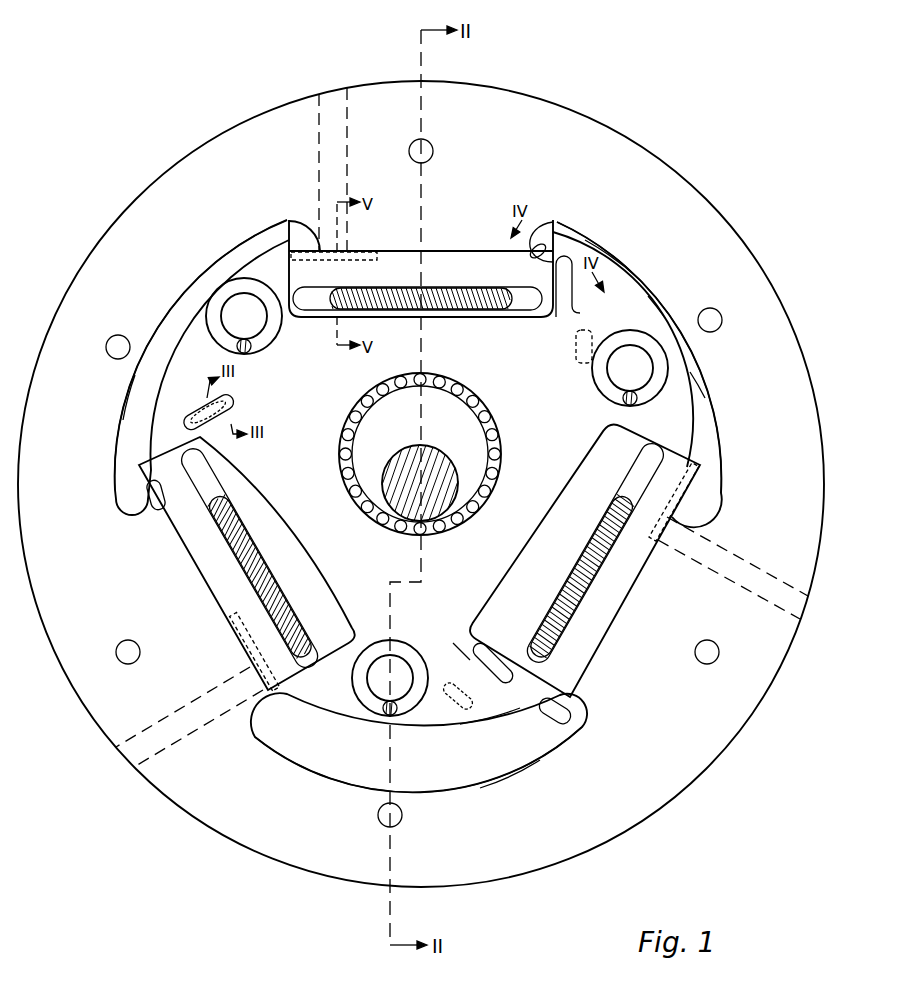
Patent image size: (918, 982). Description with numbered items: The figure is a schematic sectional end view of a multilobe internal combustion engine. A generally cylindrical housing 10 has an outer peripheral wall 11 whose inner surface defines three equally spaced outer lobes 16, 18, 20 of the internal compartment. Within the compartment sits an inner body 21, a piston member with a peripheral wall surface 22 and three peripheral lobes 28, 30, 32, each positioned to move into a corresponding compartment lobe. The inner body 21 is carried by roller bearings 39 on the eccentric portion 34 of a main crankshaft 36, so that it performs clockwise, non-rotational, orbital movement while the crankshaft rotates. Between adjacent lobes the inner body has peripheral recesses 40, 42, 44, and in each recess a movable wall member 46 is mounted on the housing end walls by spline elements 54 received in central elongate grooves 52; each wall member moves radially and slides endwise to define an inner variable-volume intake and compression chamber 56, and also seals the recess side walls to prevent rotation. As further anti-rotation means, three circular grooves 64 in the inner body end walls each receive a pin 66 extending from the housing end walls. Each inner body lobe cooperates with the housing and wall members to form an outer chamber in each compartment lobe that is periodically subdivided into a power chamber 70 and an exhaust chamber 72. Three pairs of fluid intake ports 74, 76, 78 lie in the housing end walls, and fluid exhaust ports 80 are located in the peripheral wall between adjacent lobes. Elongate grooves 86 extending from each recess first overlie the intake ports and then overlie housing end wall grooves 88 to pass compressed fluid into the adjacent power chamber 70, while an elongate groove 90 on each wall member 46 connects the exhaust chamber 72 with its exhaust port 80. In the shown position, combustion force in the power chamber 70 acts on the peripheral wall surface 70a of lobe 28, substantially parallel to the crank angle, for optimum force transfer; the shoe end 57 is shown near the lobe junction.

The housing 10 is at (842, 477).
The outer peripheral wall 11 is at (697, 207).
The outer lobe 16 is at (656, 296).
The outer lobe 18 is at (510, 784).
The outer lobe 20 is at (126, 386).
The inner body 21 is at (521, 392).
The peripheral wall surface 22 is at (486, 722).
The peripheral lobe 28 is at (682, 406).
The peripheral lobe 30 is at (420, 725).
The peripheral lobe 32 is at (266, 236).
The eccentric portion 34 is at (409, 421).
The main crankshaft 36 is at (456, 471).
The roller bearings 39 is at (501, 452).
The peripheral recess 40 is at (470, 319).
The peripheral recess 42 is at (560, 489).
The peripheral recess 44 is at (338, 592).
The movable wall member 46 is at (476, 283).
The central elongate groove 52 is at (515, 306).
The spline element 54 is at (418, 308).
The intake and compression chamber 56 is at (287, 547).
The shoe end 57 is at (662, 452).
The circular groove 64 is at (283, 318).
The pin 66 is at (252, 347).
The power chamber 70 is at (124, 441).
The peripheral wall surface 70a is at (586, 243).
The exhaust chamber 72 is at (305, 222).
The fluid intake port 74 is at (598, 334).
The fluid intake port 76 is at (476, 700).
The fluid intake port 78 is at (226, 408).
The fluid exhaust port 80 is at (332, 96).
The elongate groove 86 is at (240, 395).
The groove 88 is at (542, 225).
The elongate groove 90 is at (366, 255).